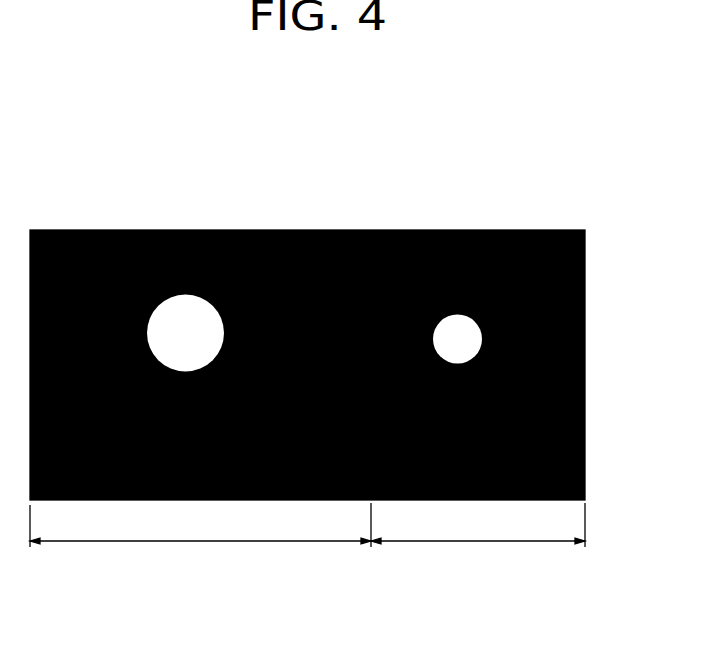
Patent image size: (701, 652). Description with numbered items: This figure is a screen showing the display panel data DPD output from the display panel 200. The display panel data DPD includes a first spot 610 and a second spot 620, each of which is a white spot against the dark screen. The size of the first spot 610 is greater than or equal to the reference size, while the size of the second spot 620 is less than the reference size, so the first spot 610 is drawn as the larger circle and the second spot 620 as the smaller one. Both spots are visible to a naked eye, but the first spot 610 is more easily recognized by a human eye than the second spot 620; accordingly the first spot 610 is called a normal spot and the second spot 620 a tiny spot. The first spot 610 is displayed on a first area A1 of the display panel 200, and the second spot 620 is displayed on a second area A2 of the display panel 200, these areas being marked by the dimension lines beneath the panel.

The display panel 200 is at (70, 229).
The display panel data DPD is at (586, 176).
The first spot 610 is at (185, 333).
The second spot 620 is at (457, 339).
The first area A1 is at (200, 539).
The second area A2 is at (478, 539).